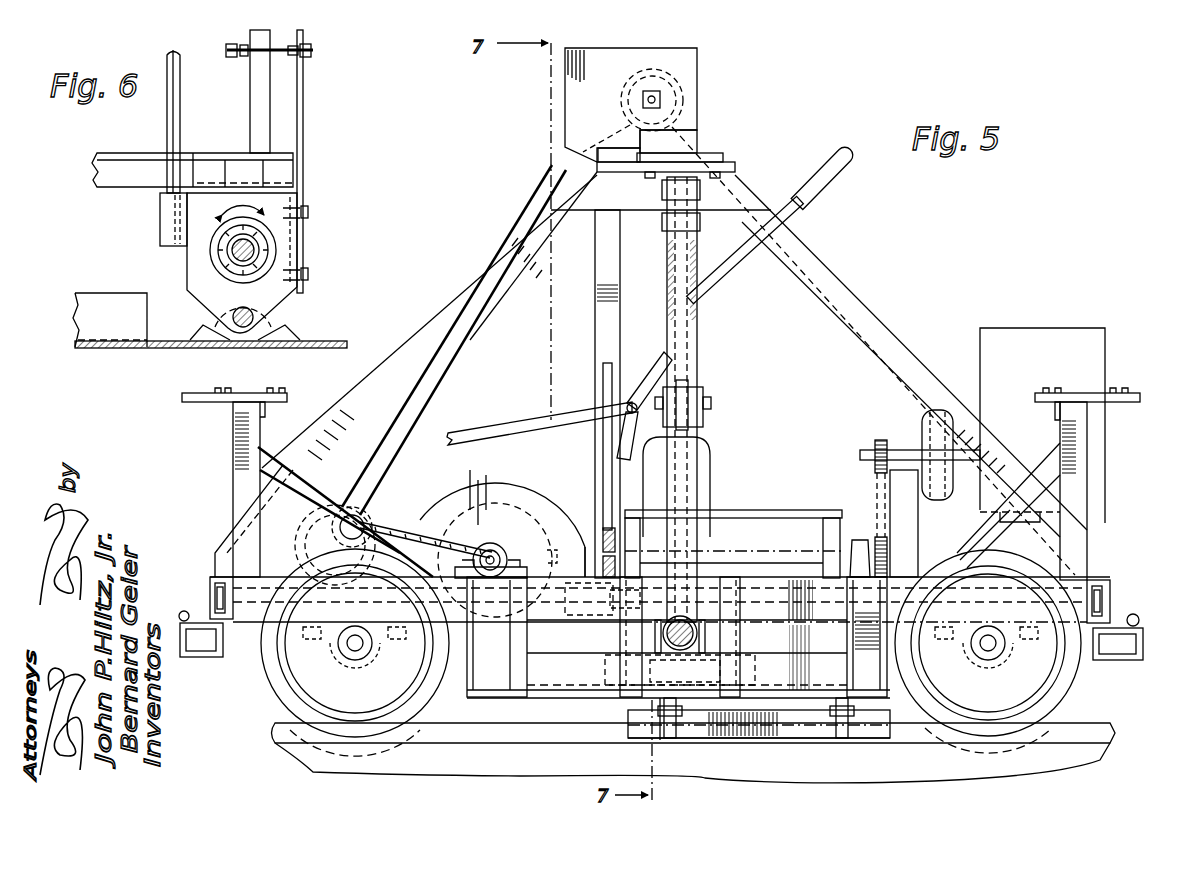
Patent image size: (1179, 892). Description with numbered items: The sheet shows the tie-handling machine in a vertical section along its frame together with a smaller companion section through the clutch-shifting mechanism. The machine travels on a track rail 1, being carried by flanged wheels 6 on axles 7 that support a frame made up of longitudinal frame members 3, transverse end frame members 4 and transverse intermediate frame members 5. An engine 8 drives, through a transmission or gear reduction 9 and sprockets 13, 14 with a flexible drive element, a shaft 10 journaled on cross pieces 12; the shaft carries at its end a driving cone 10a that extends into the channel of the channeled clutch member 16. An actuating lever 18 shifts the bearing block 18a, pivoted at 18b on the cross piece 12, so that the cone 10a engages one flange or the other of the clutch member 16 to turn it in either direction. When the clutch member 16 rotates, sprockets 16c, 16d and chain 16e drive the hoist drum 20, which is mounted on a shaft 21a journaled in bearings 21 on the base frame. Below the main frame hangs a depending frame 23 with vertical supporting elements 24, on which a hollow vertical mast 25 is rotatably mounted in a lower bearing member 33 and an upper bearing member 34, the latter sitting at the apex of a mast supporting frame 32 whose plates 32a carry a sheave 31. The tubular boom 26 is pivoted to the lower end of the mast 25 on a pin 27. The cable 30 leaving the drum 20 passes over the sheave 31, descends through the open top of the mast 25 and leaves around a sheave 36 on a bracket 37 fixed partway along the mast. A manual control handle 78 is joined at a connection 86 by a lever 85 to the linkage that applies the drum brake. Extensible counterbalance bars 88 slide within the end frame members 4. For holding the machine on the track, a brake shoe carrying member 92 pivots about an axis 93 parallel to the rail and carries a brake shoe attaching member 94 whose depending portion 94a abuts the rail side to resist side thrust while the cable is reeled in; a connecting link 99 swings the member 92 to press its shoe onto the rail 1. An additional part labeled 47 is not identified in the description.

In FIG. 5, the track rail 1 is at (278, 735).
In FIG. 5, the longitudinal frame members 3 is at (255, 612).
In FIG. 5, the transverse end frame members 4 is at (210, 585).
In FIG. 5, the transverse intermediate frame members 5 is at (625, 680).
In FIG. 5, the flanged wheels 6 is at (282, 683).
In FIG. 5, the axles 7 is at (353, 648).
In FIG. 5, the engine 8 is at (1030, 336).
In FIG. 5, the transmission or gear reduction 9 is at (923, 416).
In FIG. 6, the shaft 10 is at (238, 252).
In FIG. 5, the shaft 10 is at (738, 556).
In FIG. 5, the driving cone 10a is at (552, 558).
In FIG. 5, the cross pieces 12 is at (608, 605).
In FIG. 5, the sprocket 13 is at (875, 452).
In FIG. 5, the sprocket 14 is at (878, 538).
In FIG. 5, the channeled clutch member 16 is at (456, 483).
In FIG. 5, the sprocket 16c is at (490, 547).
In FIG. 5, the sprocket 16d is at (366, 524).
In FIG. 5, the chain 16e is at (413, 516).
In FIG. 6, the actuating lever 18 is at (167, 108).
In FIG. 5, the actuating lever 18 is at (603, 466).
In FIG. 6, the bearing block 18a is at (265, 243).
In FIG. 5, the bearing block 18a is at (603, 540).
In FIG. 6, the pivot 18b is at (240, 330).
In FIG. 5, the hoist drum 20 is at (300, 530).
In FIG. 5, the bearings 21 is at (332, 548).
In FIG. 5, the shaft 21a is at (360, 515).
In FIG. 5, the depending frame 23 is at (575, 690).
In FIG. 5, the vertical supporting elements 24 is at (510, 690).
In FIG. 5, the hollow vertical mast 25 is at (690, 488).
In FIG. 5, the tubular boom 26 is at (706, 640).
In FIG. 5, the pivot pin 27 is at (697, 622).
In FIG. 5, the cable 30 is at (698, 312).
In FIG. 5, the sheave 31 is at (674, 92).
In FIG. 5, the mast supporting frame 32 is at (418, 347).
In FIG. 5, the plates 32a is at (690, 62).
In FIG. 5, the lower bearing member 33 is at (755, 680).
In FIG. 5, the upper bearing member 34 is at (708, 150).
In FIG. 5, the sheave 36 is at (690, 386).
In FIG. 5, the bracket 37 is at (690, 368).
In FIG. 5, the support post 47 is at (625, 640).
In FIG. 5, the manual control handle 78 is at (737, 268).
In FIG. 5, the lever 85 is at (505, 430).
In FIG. 5, the connection 86 is at (633, 403).
In FIG. 5, the extensible bars 88 is at (214, 600).
In FIG. 5, the brake shoe carrying member 92 is at (670, 732).
In FIG. 5, the pivot axis 93 is at (702, 725).
In FIG. 5, the brake shoe attaching member 94 is at (632, 714).
In FIG. 5, the depending portion 94a is at (780, 740).
In FIG. 5, the connecting link 99 is at (660, 742).